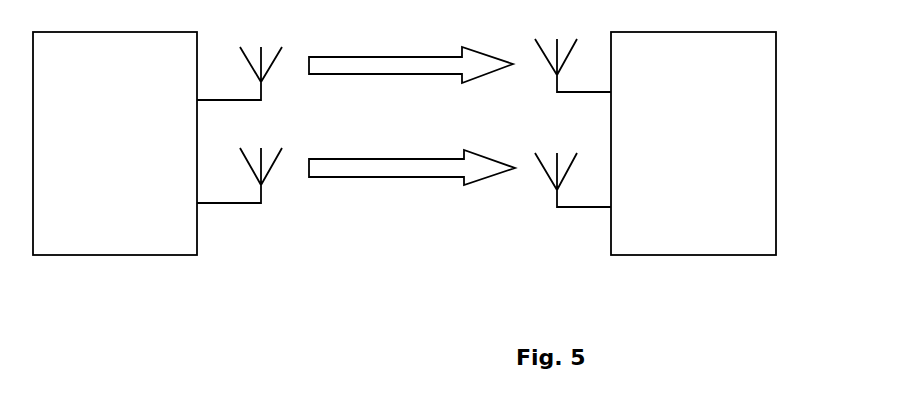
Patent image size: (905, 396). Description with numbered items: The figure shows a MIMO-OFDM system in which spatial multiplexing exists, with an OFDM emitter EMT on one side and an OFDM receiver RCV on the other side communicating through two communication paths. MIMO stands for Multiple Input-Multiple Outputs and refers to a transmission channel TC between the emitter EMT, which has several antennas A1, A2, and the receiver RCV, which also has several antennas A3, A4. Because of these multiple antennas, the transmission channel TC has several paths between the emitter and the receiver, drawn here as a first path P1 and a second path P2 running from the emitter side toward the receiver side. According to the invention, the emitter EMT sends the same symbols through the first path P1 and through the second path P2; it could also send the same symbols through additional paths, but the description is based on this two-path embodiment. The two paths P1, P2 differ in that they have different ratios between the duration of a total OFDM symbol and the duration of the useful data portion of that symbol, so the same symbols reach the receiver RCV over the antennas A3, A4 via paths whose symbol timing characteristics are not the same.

The emitter EMT is at (122, 239).
The receiver RCV is at (676, 238).
The antenna A1 is at (265, 92).
The antenna A2 is at (265, 195).
The antenna A3 is at (553, 78).
The antenna A4 is at (553, 196).
The first path P1 is at (400, 68).
The second path P2 is at (413, 167).
The transmission channel TC is at (369, 250).